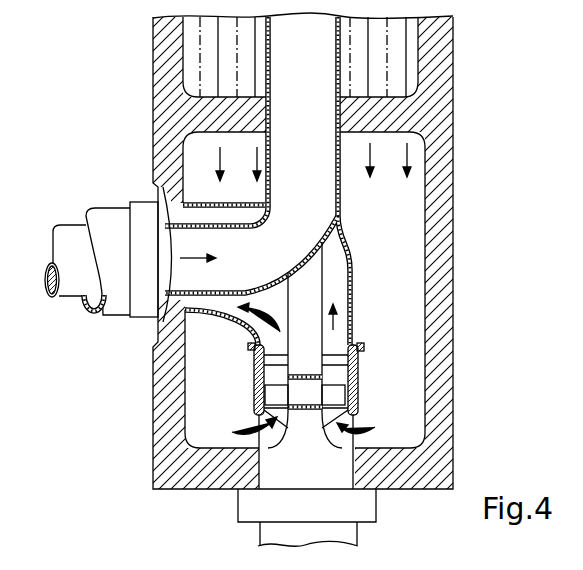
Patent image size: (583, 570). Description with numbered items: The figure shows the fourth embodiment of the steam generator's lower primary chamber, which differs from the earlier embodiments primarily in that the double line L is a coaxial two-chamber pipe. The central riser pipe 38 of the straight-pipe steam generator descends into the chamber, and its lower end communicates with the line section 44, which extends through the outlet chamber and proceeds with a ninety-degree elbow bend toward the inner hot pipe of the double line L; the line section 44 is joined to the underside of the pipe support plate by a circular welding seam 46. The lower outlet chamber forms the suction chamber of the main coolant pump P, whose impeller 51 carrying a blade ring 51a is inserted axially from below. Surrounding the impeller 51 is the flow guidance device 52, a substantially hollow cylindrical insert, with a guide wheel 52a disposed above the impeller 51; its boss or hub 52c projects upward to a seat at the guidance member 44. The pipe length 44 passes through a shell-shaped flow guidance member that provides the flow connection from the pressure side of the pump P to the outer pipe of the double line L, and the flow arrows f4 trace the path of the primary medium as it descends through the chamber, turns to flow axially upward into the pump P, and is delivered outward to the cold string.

The riser pipe 38 is at (288, 58).
The circular welding seam 46 is at (233, 121).
The line section 44 is at (347, 116).
The boss or hub 52c is at (286, 280).
The guide wheel 52a is at (228, 399).
The blade ring 51a is at (278, 388).
The flow guidance device 52 is at (374, 416).
The impeller 51 is at (332, 391).
The main coolant pump P is at (339, 401).
The double line L is at (112, 247).
The flow arrows f4 is at (312, 288).